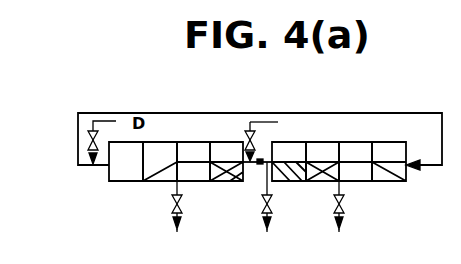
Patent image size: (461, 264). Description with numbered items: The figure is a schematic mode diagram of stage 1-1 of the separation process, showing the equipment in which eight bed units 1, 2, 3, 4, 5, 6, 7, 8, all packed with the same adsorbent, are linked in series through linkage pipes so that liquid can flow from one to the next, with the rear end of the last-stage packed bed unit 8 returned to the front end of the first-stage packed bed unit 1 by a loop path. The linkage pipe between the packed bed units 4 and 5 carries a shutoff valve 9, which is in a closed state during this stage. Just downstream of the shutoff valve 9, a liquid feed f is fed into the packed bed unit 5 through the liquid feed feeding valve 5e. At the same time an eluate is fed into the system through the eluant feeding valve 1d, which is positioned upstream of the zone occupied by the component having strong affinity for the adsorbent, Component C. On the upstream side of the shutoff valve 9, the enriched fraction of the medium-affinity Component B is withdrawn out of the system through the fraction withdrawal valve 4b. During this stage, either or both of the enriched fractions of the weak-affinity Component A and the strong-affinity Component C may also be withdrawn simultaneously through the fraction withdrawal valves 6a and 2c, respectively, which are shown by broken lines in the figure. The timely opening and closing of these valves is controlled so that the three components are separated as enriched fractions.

The first stage of the process 1-1 is at (228, 141).
The eluant feeding valve 1d is at (88, 134).
The liquid feed feeding valve 5e is at (251, 146).
The liquid feed f is at (279, 122).
The shutoff valve 9 is at (259, 164).
The fraction withdrawal valve 6a is at (182, 205).
The fraction withdrawal valve 4b is at (272, 206).
The fraction withdrawal valve 2c is at (344, 207).
The packed bed unit 1 is at (389, 150).
The packed bed unit 2 is at (355, 151).
The packed bed unit 3 is at (322, 150).
The packed bed unit 4 is at (289, 150).
The packed bed unit 5 is at (226, 150).
The packed bed unit 6 is at (193, 151).
The packed bed unit 7 is at (160, 150).
The packed bed unit 8 is at (126, 150).